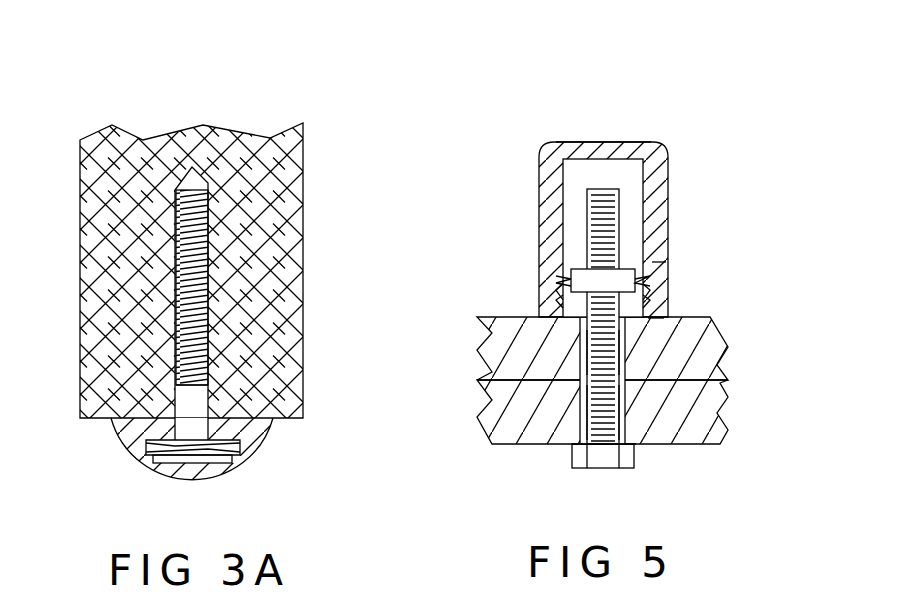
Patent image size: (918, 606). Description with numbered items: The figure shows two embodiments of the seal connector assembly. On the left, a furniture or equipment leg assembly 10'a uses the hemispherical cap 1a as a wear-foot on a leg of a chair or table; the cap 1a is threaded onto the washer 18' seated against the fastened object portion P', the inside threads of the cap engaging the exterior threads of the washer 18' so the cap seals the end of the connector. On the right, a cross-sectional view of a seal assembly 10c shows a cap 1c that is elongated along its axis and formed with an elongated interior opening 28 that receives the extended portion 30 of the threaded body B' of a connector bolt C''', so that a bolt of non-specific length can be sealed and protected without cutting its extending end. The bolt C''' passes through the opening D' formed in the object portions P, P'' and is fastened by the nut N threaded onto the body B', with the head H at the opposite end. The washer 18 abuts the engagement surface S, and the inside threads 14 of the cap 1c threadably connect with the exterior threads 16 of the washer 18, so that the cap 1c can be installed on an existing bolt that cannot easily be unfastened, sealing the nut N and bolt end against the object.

In FIG. 3A, the furniture or equipment leg assembly 10'a is at (240, 204).
In FIG. 3A, the object portion P' is at (215, 261).
In FIG. 3A, the washer 18' is at (260, 459).
In FIG. 3A, the cap 1a is at (190, 478).
In FIG. 5, the seal assembly 10c is at (602, 120).
In FIG. 5, the cap 1c is at (598, 150).
In FIG. 5, the elongated interior opening 28 is at (590, 175).
In FIG. 5, the extended portion 30 is at (590, 203).
In FIG. 5, the exterior threads 16 is at (557, 298).
In FIG. 5, the inside threads 14 is at (663, 280).
In FIG. 5, the washer 18 is at (680, 256).
In FIG. 5, the nut N is at (660, 258).
In FIG. 5, the engagement surface S is at (666, 330).
In FIG. 5, the object portion P is at (633, 345).
In FIG. 5, the object portion P'' is at (641, 412).
In FIG. 5, the threaded body B' is at (498, 372).
In FIG. 5, the connector bolt C''' is at (498, 418).
In FIG. 5, the bore bottom D' is at (513, 471).
In FIG. 5, the head H is at (600, 463).